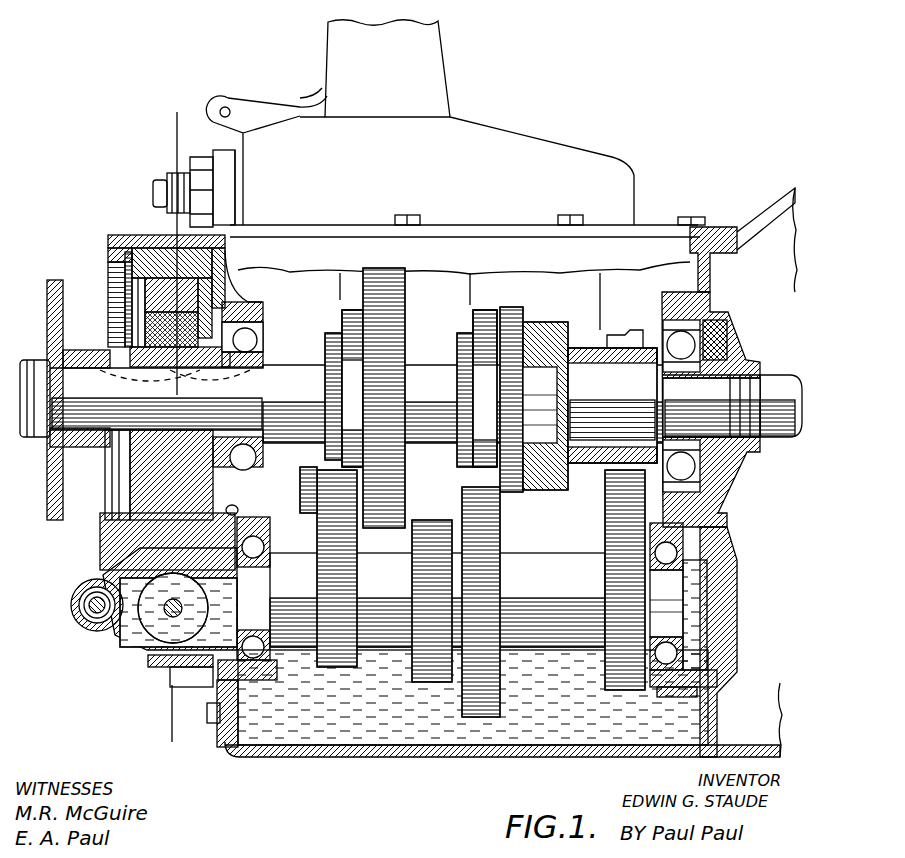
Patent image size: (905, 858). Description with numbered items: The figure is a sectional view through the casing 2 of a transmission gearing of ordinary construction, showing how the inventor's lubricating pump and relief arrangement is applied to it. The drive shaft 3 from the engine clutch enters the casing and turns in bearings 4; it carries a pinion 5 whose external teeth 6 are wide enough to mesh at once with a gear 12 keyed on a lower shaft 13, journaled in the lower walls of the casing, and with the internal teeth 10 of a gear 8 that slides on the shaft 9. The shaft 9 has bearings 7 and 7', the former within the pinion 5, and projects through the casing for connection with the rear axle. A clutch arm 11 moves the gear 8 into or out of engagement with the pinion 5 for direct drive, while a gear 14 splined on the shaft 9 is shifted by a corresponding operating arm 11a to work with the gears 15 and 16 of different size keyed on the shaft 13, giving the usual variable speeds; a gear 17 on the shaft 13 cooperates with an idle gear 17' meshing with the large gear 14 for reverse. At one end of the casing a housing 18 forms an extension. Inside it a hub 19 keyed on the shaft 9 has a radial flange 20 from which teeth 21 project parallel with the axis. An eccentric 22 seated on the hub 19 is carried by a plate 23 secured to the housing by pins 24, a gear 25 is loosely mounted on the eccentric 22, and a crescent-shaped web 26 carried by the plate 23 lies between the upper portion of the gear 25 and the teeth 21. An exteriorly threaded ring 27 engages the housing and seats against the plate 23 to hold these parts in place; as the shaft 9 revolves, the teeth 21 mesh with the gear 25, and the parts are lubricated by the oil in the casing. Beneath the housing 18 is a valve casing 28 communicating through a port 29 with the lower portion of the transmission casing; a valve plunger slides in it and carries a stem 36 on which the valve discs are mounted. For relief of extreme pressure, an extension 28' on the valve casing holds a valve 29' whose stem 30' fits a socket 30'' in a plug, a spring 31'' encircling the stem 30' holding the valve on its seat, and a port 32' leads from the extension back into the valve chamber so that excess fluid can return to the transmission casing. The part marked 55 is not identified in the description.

The casing 2 is at (712, 240).
The drive shaft 3 is at (717, 395).
The bearings 4 is at (766, 312).
The pinion 5 is at (700, 460).
The external teeth 6 is at (715, 488).
The bearing 7 is at (710, 403).
The bearing 7' is at (290, 279).
The gear 8 is at (545, 300).
The shaft 9 is at (65, 267).
The internal teeth 10 is at (560, 322).
The clutch arm 11 is at (525, 292).
The operating arm 11a is at (373, 273).
The gear 12 is at (635, 585).
The shaft 13 is at (660, 607).
The gear 14 is at (410, 277).
The gear 15 is at (460, 720).
The gear 16 is at (433, 673).
The gear 17 is at (321, 627).
The idle gear 17' is at (313, 565).
The housing 18 is at (137, 233).
The hub 19 is at (113, 320).
The radial flange 20 is at (243, 283).
The teeth 21 is at (228, 258).
The eccentric 22 is at (153, 477).
The plate 23 is at (127, 527).
The pins 24 is at (240, 510).
The gear 25 is at (105, 263).
The crescent-shaped web 26 is at (107, 247).
The exteriorly threaded ring 27 is at (110, 235).
The valve casing 28 is at (142, 656).
The extension 28' is at (71, 605).
The port 29 is at (114, 649).
The valve 29' is at (65, 613).
The stem 30' is at (116, 650).
The socket 30'' is at (415, 58).
The spring 31'' is at (62, 625).
The port 32' is at (120, 684).
The stem 36 is at (150, 638).
The nut 55 is at (220, 138).